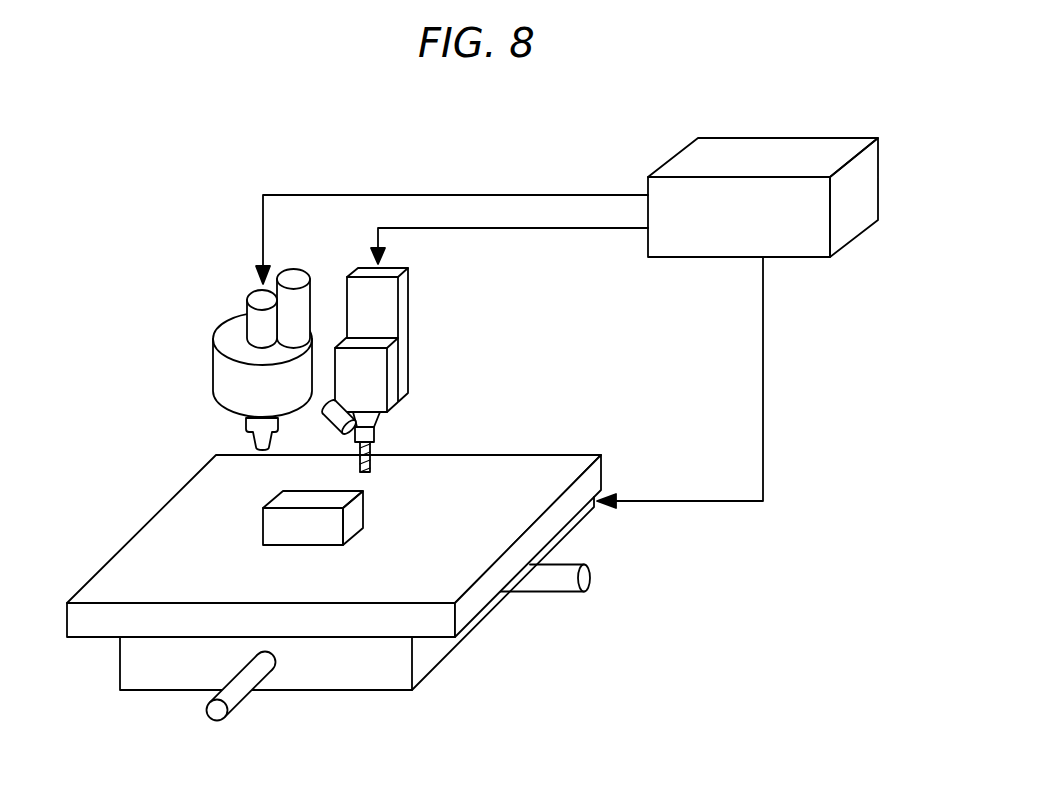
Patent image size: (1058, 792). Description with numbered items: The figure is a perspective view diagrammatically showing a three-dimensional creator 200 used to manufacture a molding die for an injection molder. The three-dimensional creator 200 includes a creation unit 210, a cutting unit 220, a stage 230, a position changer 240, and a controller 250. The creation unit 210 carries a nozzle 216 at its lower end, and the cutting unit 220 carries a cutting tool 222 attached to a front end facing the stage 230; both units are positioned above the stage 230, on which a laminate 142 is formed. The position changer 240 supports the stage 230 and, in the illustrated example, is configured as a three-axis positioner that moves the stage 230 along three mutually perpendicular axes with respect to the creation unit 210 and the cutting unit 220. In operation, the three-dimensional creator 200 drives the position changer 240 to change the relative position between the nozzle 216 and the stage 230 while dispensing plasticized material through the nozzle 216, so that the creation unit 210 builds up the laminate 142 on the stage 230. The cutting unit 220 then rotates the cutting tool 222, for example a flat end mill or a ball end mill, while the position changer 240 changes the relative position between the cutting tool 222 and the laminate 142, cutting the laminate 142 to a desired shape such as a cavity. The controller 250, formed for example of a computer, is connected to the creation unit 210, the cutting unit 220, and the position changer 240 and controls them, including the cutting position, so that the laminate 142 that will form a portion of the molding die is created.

The three-dimensional creator 200 is at (187, 202).
The controller 250 is at (738, 160).
The creation unit 210 is at (232, 378).
The nozzle 216 is at (248, 445).
The cutting unit 220 is at (367, 377).
The cutting tool 222 is at (370, 463).
The laminate 142 is at (295, 527).
The stage 230 is at (467, 606).
The position changer 240 is at (432, 652).